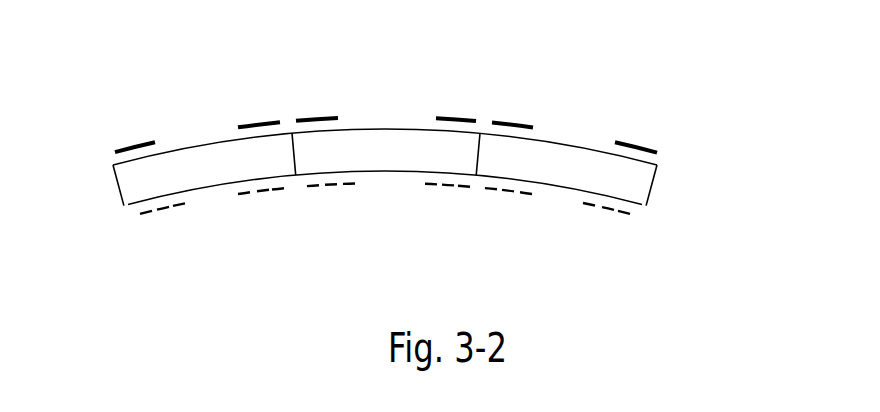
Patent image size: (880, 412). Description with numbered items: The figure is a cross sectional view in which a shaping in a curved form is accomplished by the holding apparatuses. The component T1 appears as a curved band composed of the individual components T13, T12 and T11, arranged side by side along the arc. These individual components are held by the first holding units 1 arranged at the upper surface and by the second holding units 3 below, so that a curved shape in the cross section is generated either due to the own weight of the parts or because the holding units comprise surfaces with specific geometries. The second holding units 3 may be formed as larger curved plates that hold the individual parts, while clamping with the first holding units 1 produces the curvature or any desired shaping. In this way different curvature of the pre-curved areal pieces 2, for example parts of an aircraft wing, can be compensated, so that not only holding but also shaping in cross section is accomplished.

The component T1 is at (88, 37).
The first holding unit 1 is at (132, 147).
The pre-curved areal piece 2 is at (642, 182).
The second holding unit 3 is at (167, 210).
The individual component T11 is at (565, 152).
The individual component T12 is at (381, 138).
The individual component T13 is at (208, 155).